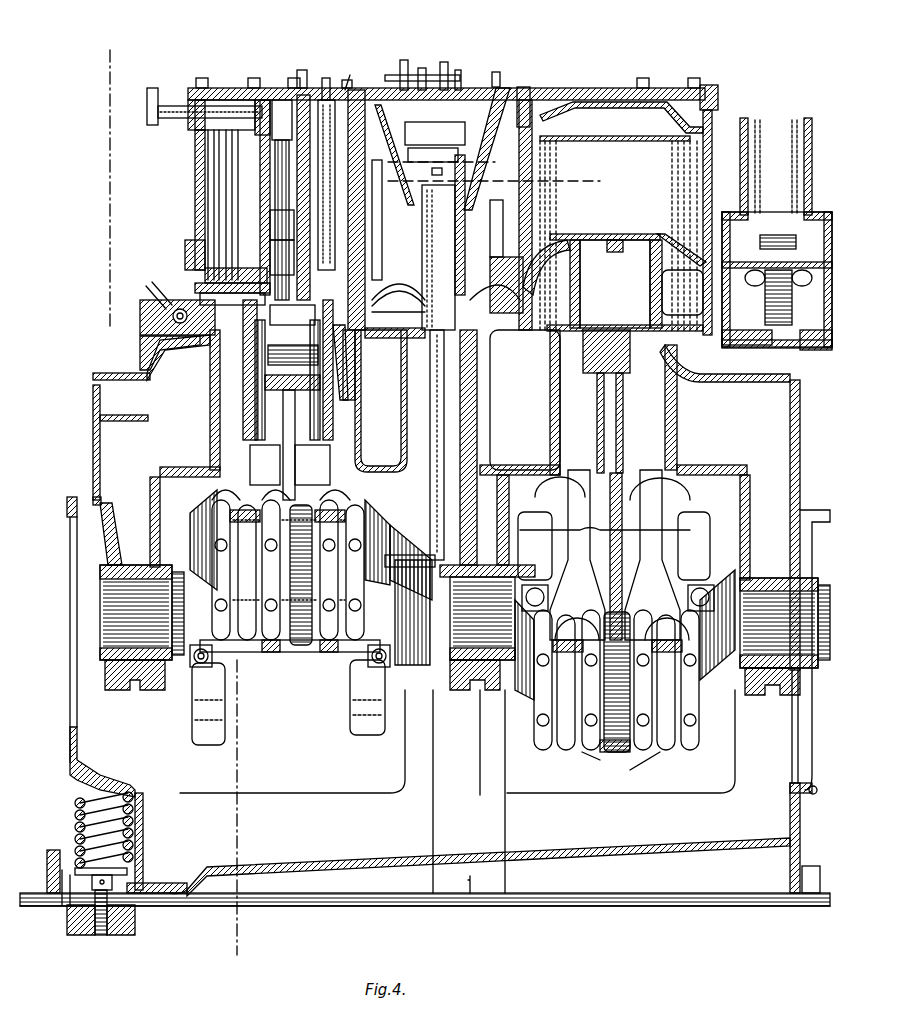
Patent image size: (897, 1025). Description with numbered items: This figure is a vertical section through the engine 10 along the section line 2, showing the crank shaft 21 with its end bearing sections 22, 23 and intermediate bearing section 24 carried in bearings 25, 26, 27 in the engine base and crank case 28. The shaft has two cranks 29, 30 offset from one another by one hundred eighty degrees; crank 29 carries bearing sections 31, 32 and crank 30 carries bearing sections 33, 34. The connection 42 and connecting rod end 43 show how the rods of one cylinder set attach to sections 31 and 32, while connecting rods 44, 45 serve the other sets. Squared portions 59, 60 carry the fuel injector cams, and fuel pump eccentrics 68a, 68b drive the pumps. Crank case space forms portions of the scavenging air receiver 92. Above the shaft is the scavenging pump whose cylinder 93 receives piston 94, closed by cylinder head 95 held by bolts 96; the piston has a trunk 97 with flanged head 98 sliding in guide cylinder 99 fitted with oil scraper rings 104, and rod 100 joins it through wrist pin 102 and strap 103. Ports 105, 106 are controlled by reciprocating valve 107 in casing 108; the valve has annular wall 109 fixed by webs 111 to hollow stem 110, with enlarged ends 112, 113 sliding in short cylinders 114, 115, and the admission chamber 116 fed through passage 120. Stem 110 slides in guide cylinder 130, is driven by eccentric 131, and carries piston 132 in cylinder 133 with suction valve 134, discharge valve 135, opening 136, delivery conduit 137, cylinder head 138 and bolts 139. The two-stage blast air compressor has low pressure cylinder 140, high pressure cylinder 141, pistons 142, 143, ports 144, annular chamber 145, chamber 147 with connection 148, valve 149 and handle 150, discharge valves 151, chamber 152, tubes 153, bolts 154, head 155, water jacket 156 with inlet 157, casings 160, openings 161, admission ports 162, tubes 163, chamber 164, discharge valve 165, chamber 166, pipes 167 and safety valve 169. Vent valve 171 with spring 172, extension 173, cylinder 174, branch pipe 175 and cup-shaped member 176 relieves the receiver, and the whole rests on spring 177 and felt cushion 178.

The section line 2 is at (104, 58).
The engine 10 is at (578, 752).
The crank shaft 21 is at (100, 630).
The end bearing section 22 is at (142, 612).
The end bearing section 23 is at (785, 623).
The intermediate bearing section 24 is at (482, 618).
The bearing 25 is at (120, 680).
The bearing 26 is at (778, 695).
The bearing 27 is at (465, 690).
The engine base and crank case 28 is at (800, 450).
The crank 29 is at (390, 545).
The crank 30 is at (530, 700).
The bearing section 31 is at (225, 515).
The bearing section 32 is at (365, 512).
The bearing section 33 is at (590, 605).
The bearing section 34 is at (642, 605).
The connecting rod connection 42 is at (262, 652).
The connecting rod end 43 is at (320, 652).
The connecting rod 44 is at (575, 560).
The connecting rod 45 is at (630, 755).
The squared portion 59 is at (410, 580).
The squared portion 60 is at (728, 580).
The fuel pump eccentric 68a is at (225, 735).
The fuel pump eccentric 68b is at (415, 640).
The scavenging air receiver 92 is at (450, 455).
The scavenging pump cylinder 93 is at (713, 130).
The scavenging pump piston 94 is at (608, 238).
The cylinder head 95 is at (712, 90).
The bolts 96 is at (648, 80).
The trunk 97 is at (610, 284).
The flanged head 98 is at (565, 233).
The guide cylinder 99 is at (664, 300).
The rod 100 is at (608, 490).
The wrist pin 102 is at (552, 360).
The strap 103 is at (640, 765).
The oil scraper rings 104 is at (678, 378).
The port 105 is at (552, 108).
The port 106 is at (525, 298).
The reciprocating valve 107 is at (490, 275).
The valve casing 108 is at (380, 232).
The annular wall 109 is at (475, 225).
The hollow stem 110 is at (446, 385).
The webs 111 is at (395, 309).
The enlarged end 112 is at (505, 110).
The enlarged end 113 is at (470, 390).
The short cylinder 114 is at (545, 162).
The short cylinder 115 is at (509, 228).
The admission chamber 116 is at (514, 215).
The passage 120 is at (504, 178).
The guide cylinder 130 is at (404, 388).
The eccentric 131 is at (462, 570).
The piston 132 is at (433, 161).
The cylinder 133 is at (435, 133).
The suction valve 134 is at (448, 72).
The discharge valve 135 is at (394, 154).
The opening 136 is at (505, 72).
The delivery conduit 137 is at (424, 70).
The cylinder head 138 is at (392, 76).
The bolts 139 is at (405, 62).
The low pressure cylinder 140 is at (215, 372).
The high pressure cylinder 141 is at (275, 190).
The low pressure piston 142 is at (215, 350).
The high pressure piston 143 is at (275, 205).
The ports 144 is at (350, 360).
The annular chamber 145 is at (358, 345).
The chamber 147 is at (93, 407).
The connection point 148 is at (196, 316).
The valve 149 is at (140, 338).
The operating handle 150 is at (150, 282).
The discharge valves 151 is at (380, 295).
The chamber 152 is at (205, 283).
The tubes 153 is at (327, 98).
The threaded bolts 154 is at (330, 80).
The head 155 is at (225, 92).
The water jacket 156 is at (196, 182).
The inlet 157 is at (190, 253).
The casings 160 is at (362, 90).
The openings 161 is at (280, 225).
The admission ports 162 is at (278, 245).
The tubes 163 is at (210, 193).
The chamber 164 is at (258, 95).
The discharge valve 165 is at (266, 140).
The chamber 166 is at (300, 72).
The pipes 167 is at (350, 75).
The safety valve 169 is at (148, 92).
The vent valve 171 is at (777, 232).
The spring 172 is at (748, 287).
The extension 173 is at (748, 343).
The cylinder 174 is at (809, 287).
The branch pipe 175 is at (805, 350).
The cup-shaped member 176 is at (762, 240).
The spring 177 is at (125, 840).
The felt cushion 178 is at (165, 885).